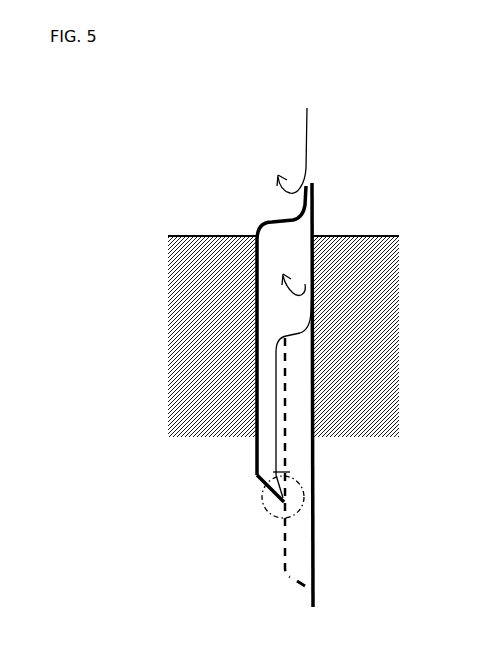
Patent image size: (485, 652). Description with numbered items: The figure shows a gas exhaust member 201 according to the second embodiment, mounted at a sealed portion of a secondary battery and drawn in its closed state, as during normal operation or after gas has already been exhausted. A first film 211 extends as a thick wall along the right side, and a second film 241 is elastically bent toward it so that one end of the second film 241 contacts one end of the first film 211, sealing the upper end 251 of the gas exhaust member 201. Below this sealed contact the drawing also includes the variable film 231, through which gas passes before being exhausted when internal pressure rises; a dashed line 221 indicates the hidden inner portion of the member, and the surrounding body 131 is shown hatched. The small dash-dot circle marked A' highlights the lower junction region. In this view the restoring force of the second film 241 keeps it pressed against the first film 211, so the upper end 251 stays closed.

The substrate / hatched body 131 is at (192, 305).
The gas exhaust member 201 is at (327, 198).
The first film 211 is at (315, 550).
The hidden inner wall (dashed) 221 is at (282, 537).
The variable film 231 is at (275, 457).
The second film 241 is at (255, 408).
The upper end 251 is at (278, 217).
The detail region A' is at (336, 497).